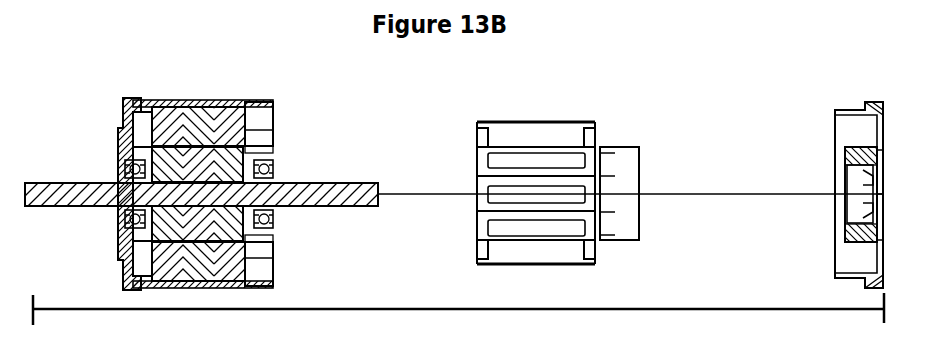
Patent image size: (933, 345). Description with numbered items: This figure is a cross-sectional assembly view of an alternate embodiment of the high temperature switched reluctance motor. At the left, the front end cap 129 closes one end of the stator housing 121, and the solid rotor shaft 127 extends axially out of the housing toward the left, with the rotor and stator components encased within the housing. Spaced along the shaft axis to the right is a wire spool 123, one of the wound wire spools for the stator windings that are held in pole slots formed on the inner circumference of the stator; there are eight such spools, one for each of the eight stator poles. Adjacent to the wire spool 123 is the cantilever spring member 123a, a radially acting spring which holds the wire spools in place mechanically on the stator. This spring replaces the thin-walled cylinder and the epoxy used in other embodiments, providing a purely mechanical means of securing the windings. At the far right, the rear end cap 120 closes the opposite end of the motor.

The rear end cap 120 is at (865, 100).
The stator housing 121 is at (265, 102).
The wire spool 123 is at (595, 120).
The cantilever spring member 123a is at (640, 147).
The rotor shaft 127 is at (77, 181).
The front end cap 129 is at (128, 97).